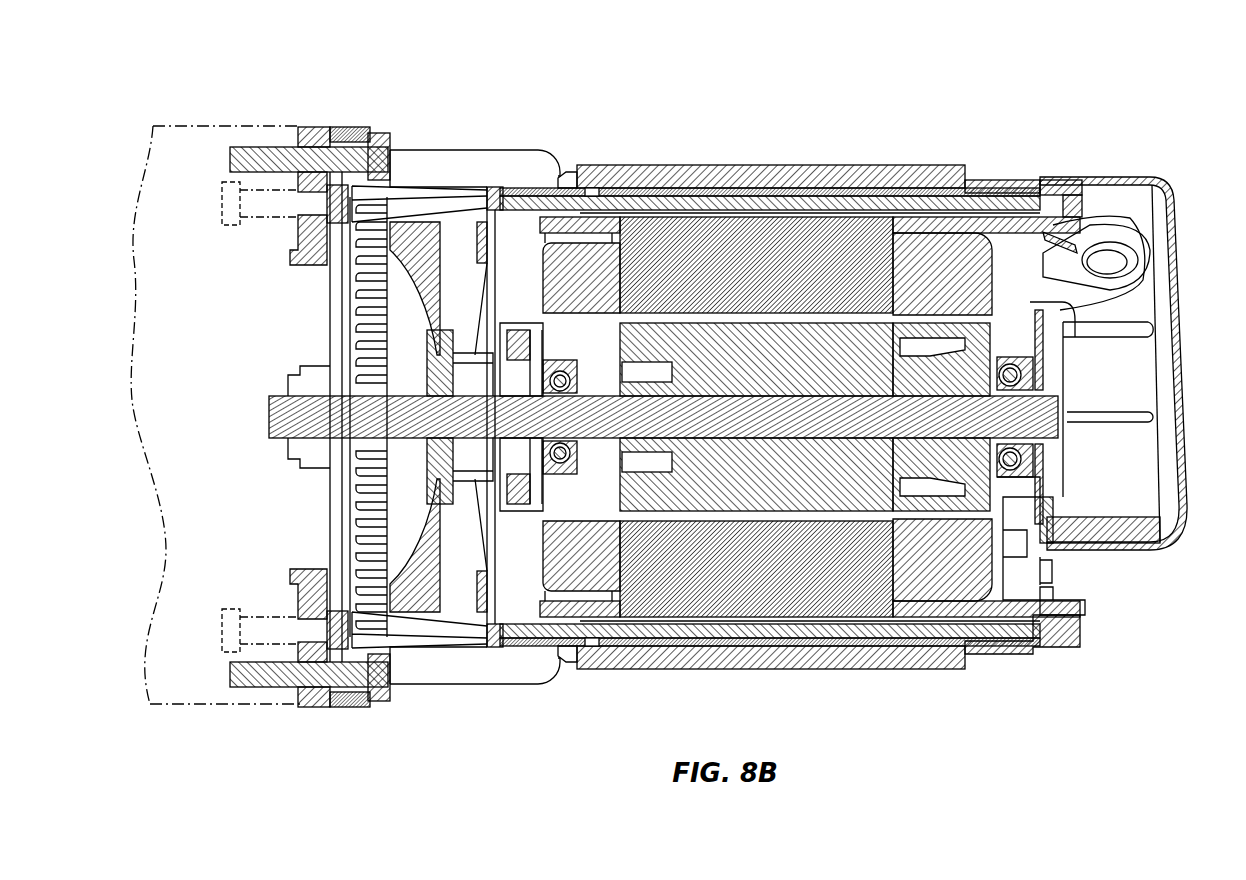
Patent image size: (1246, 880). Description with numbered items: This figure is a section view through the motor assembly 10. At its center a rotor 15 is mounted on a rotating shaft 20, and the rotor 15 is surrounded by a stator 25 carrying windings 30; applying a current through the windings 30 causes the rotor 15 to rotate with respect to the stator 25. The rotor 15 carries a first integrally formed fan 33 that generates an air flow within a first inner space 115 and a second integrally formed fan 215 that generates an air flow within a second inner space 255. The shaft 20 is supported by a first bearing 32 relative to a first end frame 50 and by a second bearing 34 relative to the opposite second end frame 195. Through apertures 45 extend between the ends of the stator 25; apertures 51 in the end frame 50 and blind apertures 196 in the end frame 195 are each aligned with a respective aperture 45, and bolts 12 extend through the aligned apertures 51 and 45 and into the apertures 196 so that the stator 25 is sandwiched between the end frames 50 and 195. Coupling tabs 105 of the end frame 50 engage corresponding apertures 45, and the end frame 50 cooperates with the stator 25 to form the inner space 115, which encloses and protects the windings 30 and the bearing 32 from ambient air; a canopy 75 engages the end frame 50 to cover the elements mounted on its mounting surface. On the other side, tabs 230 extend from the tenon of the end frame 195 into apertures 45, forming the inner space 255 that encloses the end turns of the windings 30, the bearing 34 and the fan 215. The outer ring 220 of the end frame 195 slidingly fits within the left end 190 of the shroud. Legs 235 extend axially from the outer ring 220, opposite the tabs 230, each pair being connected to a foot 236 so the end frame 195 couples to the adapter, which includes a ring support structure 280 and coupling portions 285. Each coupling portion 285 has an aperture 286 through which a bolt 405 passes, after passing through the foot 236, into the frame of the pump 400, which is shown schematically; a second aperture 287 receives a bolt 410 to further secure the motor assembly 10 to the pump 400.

The motor assembly 10 is at (975, 88).
The bolts 12 is at (1085, 182).
The rotor 15 is at (700, 497).
The rotating shaft 20 is at (268, 418).
The stator 25 is at (800, 242).
The windings 30 is at (935, 262).
The first bearing 32 is at (1021, 459).
The first integrally formed fan 33 is at (965, 330).
The second bearing 34 is at (555, 370).
The through apertures 45 is at (772, 195).
The first end frame 50 is at (1046, 595).
The apertures 51 is at (1020, 184).
The canopy 75 is at (1178, 290).
The coupling tabs 105 is at (886, 190).
The first inner space 115 is at (1012, 573).
The left end of the shroud 190 is at (575, 185).
The second end frame 195 is at (490, 600).
The blind apertures 196 is at (593, 192).
The second integrally formed fan 215 is at (598, 213).
The outer ring 220 is at (573, 165).
The tabs 230 is at (656, 212).
The legs 235 is at (440, 150).
The second inner space 255 is at (540, 590).
The ring support structure 280 is at (340, 312).
The coupling portions 285 is at (318, 145).
The aperture 286 is at (311, 140).
The second aperture 287 is at (303, 218).
The foot 236 is at (347, 128).
The pump 400 is at (160, 545).
The bolts 405 is at (390, 142).
The bolt 410 is at (222, 200).